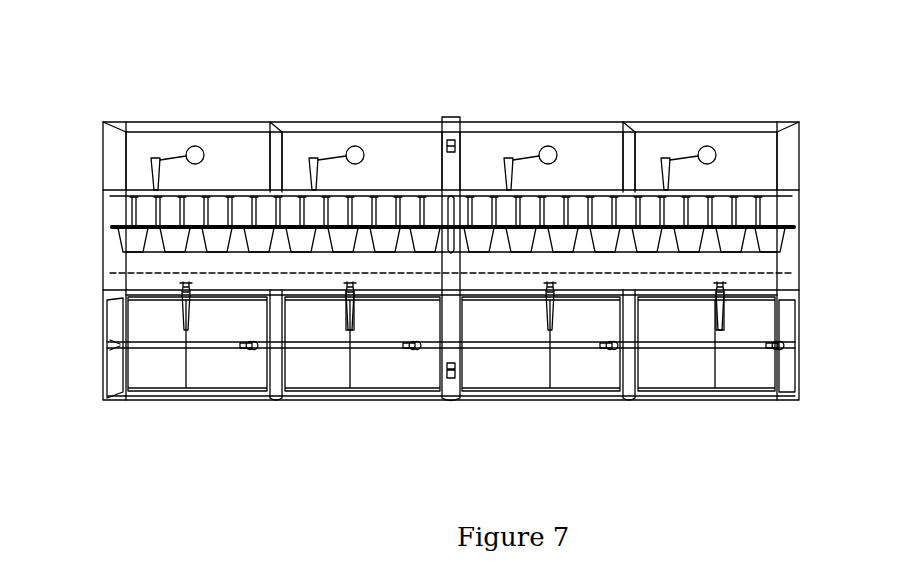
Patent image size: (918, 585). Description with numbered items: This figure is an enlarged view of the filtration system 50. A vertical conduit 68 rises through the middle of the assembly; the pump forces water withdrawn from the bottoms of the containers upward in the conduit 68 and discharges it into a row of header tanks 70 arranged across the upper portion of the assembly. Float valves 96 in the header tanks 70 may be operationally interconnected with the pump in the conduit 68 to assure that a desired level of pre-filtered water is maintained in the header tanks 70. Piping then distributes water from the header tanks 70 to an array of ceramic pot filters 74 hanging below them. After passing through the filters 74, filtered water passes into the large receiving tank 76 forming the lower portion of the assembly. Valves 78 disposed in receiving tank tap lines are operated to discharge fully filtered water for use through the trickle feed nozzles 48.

The float valve 96 is at (155, 158).
The header tank 70 is at (187, 122).
The conduit 68 is at (462, 167).
The ceramic pot filter 74 is at (107, 260).
The receiving tank 76 is at (103, 272).
The valve 78 is at (352, 284).
The trickle feed nozzle 48 is at (345, 325).
The filtration system 50 is at (192, 424).